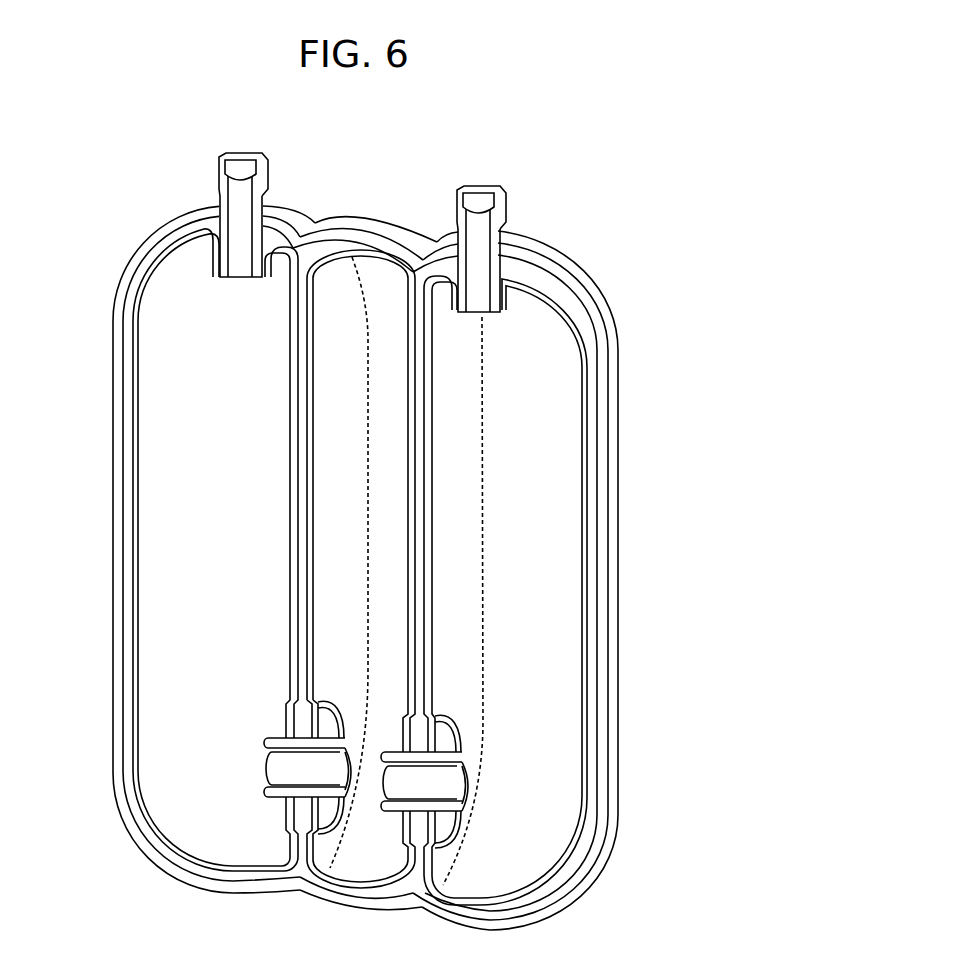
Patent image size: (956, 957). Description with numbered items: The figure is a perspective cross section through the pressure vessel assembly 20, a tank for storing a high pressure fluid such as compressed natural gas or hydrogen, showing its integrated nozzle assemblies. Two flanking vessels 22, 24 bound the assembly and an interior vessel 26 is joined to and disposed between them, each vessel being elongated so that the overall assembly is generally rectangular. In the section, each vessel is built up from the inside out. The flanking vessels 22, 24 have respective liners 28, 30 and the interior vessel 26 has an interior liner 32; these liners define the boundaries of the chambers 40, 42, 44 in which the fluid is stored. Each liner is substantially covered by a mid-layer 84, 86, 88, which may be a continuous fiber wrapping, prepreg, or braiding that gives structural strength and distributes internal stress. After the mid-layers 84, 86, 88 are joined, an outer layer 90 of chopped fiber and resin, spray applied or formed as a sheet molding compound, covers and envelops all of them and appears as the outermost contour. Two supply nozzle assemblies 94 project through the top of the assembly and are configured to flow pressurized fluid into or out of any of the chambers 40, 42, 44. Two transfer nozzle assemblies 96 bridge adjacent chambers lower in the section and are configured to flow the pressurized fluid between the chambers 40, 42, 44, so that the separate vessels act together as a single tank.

The pressure vessel assembly 20 is at (716, 256).
The flanking vessel 22 is at (170, 228).
The flanking vessel 24 is at (572, 261).
The interior vessel 26 is at (379, 213).
The liner 28 is at (140, 485).
The liner 30 is at (432, 500).
The interior liner 32 is at (316, 459).
The chamber 40 is at (236, 607).
The chamber 42 is at (529, 628).
The chamber 44 is at (359, 619).
The mid-layer 84 is at (192, 862).
The mid-layer 86 is at (540, 900).
The mid-layer 88 is at (357, 897).
The outer layer 90 is at (621, 640).
The supply nozzle assembly 94 is at (286, 180).
The transfer nozzle assembly 96 is at (246, 756).